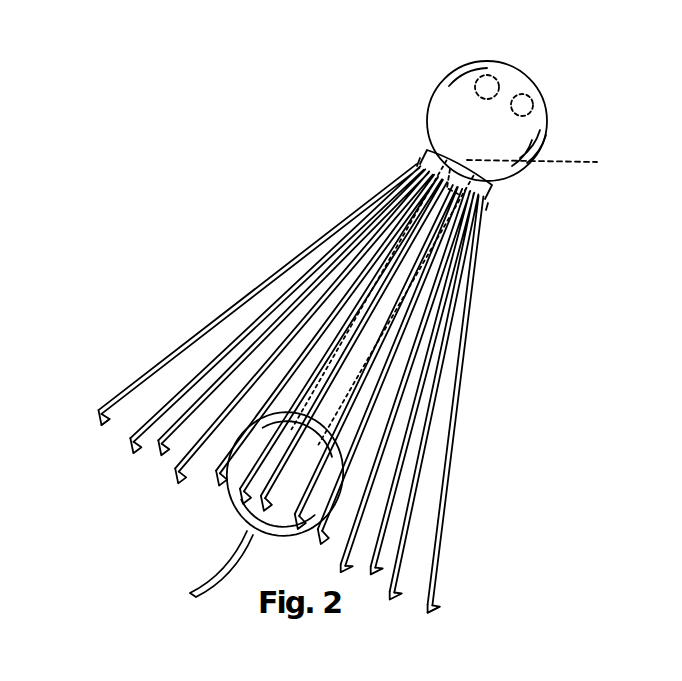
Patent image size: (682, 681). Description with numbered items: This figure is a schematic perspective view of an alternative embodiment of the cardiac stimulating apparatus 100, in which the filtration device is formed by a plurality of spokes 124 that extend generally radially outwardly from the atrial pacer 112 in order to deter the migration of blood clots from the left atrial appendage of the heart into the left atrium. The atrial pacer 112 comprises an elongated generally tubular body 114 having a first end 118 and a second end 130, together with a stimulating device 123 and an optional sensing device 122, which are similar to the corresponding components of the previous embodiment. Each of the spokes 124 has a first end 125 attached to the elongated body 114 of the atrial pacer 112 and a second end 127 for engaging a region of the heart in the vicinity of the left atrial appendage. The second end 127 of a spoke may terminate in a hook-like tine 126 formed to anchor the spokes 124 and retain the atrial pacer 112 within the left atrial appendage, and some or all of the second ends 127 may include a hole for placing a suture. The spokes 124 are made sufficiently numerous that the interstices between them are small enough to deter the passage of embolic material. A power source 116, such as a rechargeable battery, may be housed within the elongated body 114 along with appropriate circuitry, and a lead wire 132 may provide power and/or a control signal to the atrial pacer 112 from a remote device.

The cardiac stimulating apparatus 100 is at (574, 118).
The atrial pacer 112 is at (507, 181).
The elongated generally tubular body 114 is at (428, 283).
The power source 116 is at (552, 163).
The first end 118 is at (440, 96).
The sensing device 122 is at (484, 60).
The stimulating device 123 is at (541, 93).
The spokes 124 is at (273, 280).
The first end 125 is at (422, 164).
The hook-like tine 126 is at (97, 403).
The second end 127 is at (103, 417).
The second end 130 is at (232, 505).
The lead wire 132 is at (207, 586).